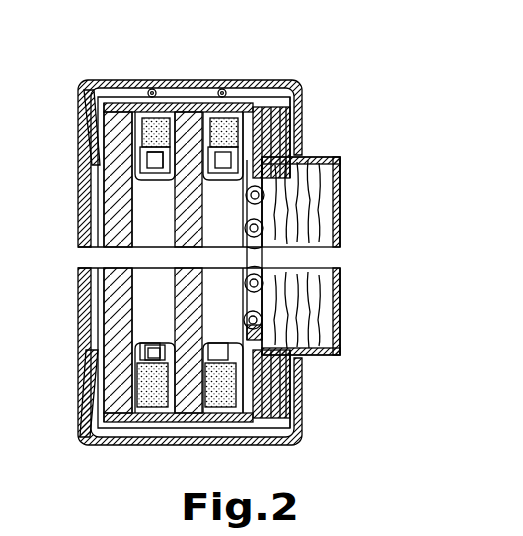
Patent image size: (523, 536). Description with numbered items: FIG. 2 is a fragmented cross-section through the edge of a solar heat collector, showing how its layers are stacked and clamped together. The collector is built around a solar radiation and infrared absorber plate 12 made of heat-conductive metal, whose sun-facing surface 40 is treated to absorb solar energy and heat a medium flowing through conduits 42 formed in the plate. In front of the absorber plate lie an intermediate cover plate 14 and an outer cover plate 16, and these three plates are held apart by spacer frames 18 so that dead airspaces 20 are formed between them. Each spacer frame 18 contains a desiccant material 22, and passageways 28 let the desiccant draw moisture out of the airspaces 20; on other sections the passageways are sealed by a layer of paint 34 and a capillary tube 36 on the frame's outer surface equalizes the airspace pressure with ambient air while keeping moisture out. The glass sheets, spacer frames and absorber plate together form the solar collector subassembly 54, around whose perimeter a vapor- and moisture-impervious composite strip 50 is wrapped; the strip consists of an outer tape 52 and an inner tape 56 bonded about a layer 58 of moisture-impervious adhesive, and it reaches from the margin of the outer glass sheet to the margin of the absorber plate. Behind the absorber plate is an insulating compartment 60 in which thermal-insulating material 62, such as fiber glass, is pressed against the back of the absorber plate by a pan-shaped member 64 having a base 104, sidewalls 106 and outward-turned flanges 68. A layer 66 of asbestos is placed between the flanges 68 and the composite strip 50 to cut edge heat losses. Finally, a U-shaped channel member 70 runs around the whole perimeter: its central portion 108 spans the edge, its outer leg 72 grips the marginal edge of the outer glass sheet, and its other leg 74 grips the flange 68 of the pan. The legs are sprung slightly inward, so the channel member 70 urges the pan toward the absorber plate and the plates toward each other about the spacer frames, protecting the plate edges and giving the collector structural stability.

The solar radiation and infrared absorber plate 12 is at (268, 178).
The intermediate cover plate 14 is at (176, 222).
The outer cover plate 16 is at (110, 217).
The spacer frame 18 is at (207, 338).
The airspace 20 is at (167, 292).
The desiccant material 22 is at (178, 110).
The passageway 28 is at (140, 347).
The layer of paint 34 is at (142, 185).
The capillary tube 36 is at (152, 89).
The surface 40 is at (247, 203).
The conduit 42 is at (257, 247).
The composite strip 50 is at (110, 95).
The outer tape 52 is at (100, 117).
The solar collector subassembly 54 is at (100, 258).
The inner tape 56 is at (243, 110).
The layer of moisture-impervious adhesive 58 is at (133, 110).
The insulating compartment 60 is at (355, 170).
The thermal-insulating material 62 is at (334, 290).
The pan-shaped member 64 is at (345, 227).
The layer of thermal-insulating material 66 is at (283, 100).
The flange 68 is at (290, 108).
The channel member 70 is at (76, 80).
The outer leg 72 is at (97, 138).
The outer leg 74 is at (295, 108).
The base 104 is at (357, 204).
The sidewall 106 is at (316, 157).
The central portion 108 is at (117, 80).